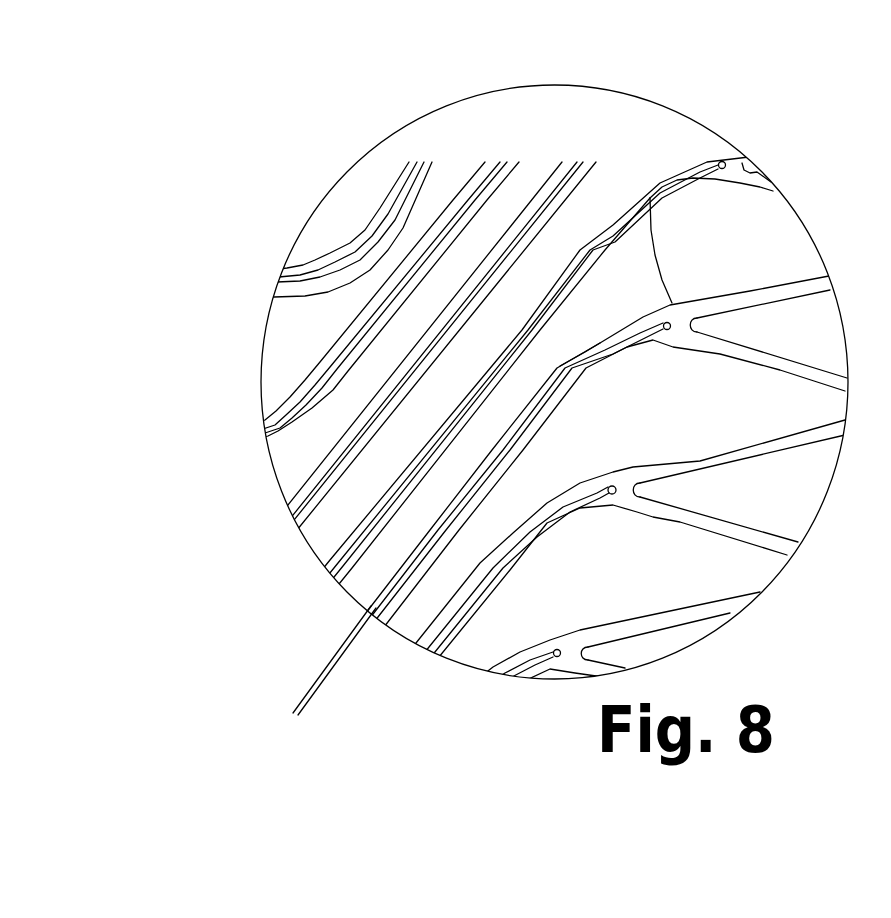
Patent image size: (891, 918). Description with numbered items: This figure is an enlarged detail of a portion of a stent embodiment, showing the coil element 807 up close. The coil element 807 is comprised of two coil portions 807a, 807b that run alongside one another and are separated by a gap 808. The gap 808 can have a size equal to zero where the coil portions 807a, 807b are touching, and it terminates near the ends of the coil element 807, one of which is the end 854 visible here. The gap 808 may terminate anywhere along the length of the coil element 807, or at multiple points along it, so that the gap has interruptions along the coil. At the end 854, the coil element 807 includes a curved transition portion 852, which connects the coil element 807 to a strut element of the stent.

The coil element 807 is at (466, 465).
The coil portion 807a is at (602, 611).
The coil portion 807b is at (457, 458).
The gap 808 is at (370, 730).
The curved transition portion 852 is at (605, 199).
The end 854 is at (662, 190).